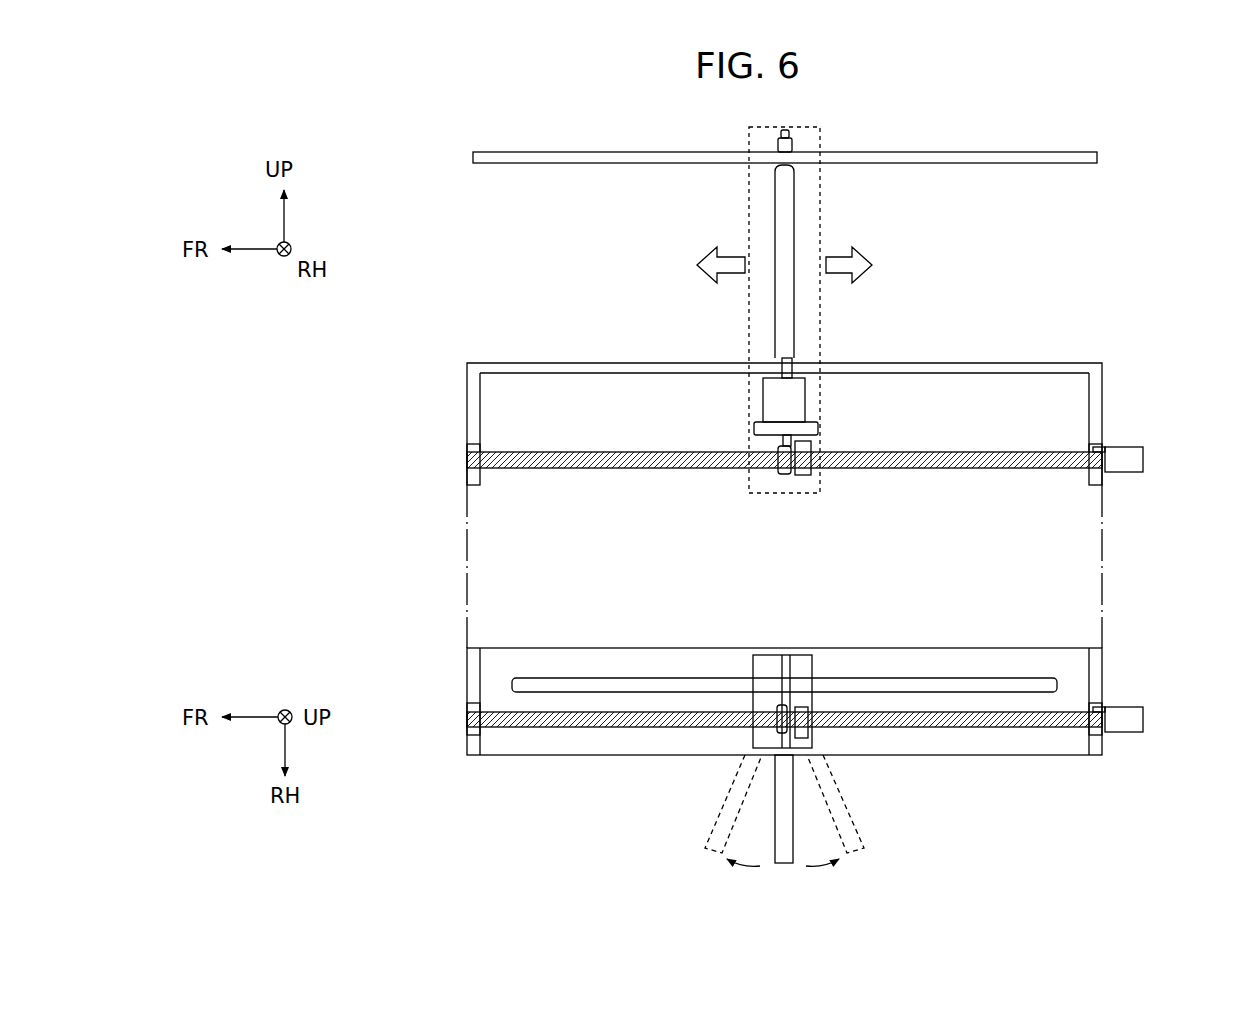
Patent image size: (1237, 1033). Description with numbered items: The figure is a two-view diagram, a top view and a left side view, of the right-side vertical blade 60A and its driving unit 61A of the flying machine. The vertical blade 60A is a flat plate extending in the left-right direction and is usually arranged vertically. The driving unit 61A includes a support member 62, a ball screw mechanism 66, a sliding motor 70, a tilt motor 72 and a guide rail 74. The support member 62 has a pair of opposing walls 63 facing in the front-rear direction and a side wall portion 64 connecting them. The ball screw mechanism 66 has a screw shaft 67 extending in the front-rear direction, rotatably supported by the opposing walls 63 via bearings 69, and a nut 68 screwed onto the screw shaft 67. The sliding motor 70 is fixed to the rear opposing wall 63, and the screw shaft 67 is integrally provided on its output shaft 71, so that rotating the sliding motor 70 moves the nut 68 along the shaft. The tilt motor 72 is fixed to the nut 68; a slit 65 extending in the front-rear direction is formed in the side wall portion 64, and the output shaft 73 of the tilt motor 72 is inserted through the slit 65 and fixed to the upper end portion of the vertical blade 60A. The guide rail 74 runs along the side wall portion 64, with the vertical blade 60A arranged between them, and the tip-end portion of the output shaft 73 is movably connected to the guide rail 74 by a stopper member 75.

The vertical blade 60A is at (796, 205).
The driving unit 61A is at (1142, 200).
The support member 62 is at (960, 362).
The opposing walls 63 is at (467, 402).
The side wall portion 64 is at (686, 362).
The slit 65 is at (615, 678).
The ball screw mechanism 66 is at (841, 501).
The screw shaft 67 is at (703, 468).
The nut 68 is at (803, 480).
The bearings 69 is at (468, 470).
The sliding motor 70 is at (1130, 473).
The output shaft of the sliding motor 71 is at (1100, 447).
The tilt motor 72 is at (806, 395).
The output shaft of the tilt motor 73 is at (798, 362).
The guide rail 74 is at (940, 151).
The stopper member 75 is at (793, 146).